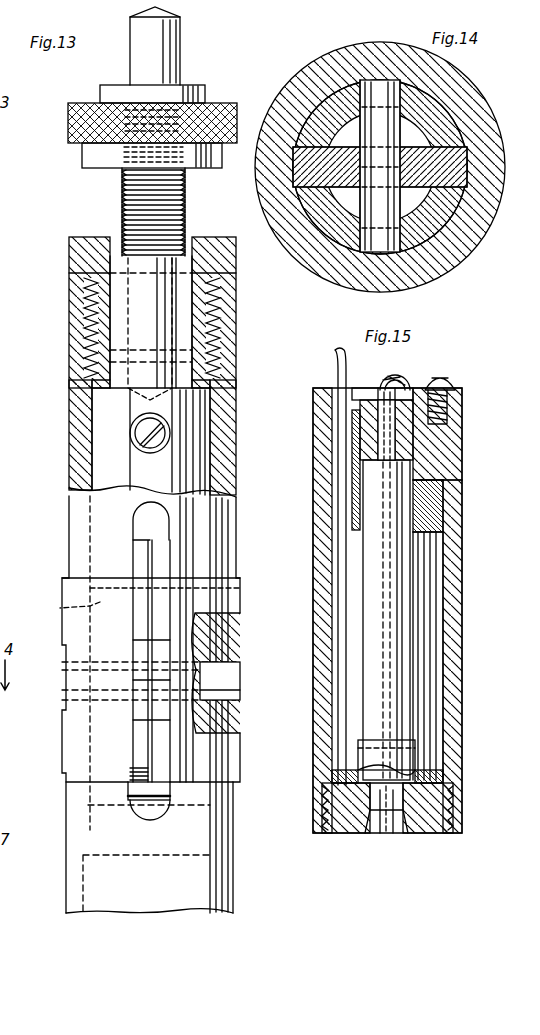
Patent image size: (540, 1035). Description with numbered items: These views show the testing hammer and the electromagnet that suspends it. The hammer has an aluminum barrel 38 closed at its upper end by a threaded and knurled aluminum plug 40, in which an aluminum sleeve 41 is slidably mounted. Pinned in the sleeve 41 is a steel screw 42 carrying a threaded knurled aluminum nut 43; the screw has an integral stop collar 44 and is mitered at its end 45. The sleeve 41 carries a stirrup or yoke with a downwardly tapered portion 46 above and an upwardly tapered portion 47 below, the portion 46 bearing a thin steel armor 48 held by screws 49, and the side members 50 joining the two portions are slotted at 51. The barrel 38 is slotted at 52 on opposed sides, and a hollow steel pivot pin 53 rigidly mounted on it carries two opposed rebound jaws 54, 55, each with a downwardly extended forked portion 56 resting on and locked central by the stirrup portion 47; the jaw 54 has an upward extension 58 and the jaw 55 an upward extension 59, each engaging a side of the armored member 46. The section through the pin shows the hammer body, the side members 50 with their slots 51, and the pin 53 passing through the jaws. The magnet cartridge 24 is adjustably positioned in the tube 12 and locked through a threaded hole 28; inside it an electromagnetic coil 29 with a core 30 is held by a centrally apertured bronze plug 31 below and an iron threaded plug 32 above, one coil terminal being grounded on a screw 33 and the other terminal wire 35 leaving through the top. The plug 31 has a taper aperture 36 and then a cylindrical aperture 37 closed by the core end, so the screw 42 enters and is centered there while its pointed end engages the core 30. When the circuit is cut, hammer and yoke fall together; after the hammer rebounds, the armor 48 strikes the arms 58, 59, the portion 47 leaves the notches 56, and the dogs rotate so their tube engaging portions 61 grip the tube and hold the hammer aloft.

In FIG. 13, the tube 12 is at (0, 570).
In FIG. 14, the tube 12 is at (345, 45).
In FIG. 15, the electromagnet housing or cartridge 24 is at (450, 615).
In FIG. 15, the hole 28 is at (445, 492).
In FIG. 15, the electromagnetic coil 29 is at (425, 660).
In FIG. 15, the core 30 is at (425, 780).
In FIG. 15, the bronze plug 31 is at (440, 806).
In FIG. 15, the iron threaded plug 32 is at (410, 440).
In FIG. 15, the screw 33 is at (448, 380).
In FIG. 15, the terminal wire 35 is at (336, 372).
In FIG. 15, the taper aperture 36 is at (370, 800).
In FIG. 15, the cylindrical aperture 37 is at (393, 800).
In FIG. 13, the aluminum barrel 38 is at (70, 878).
In FIG. 14, the aluminum barrel 38 is at (305, 128).
In FIG. 13, the threaded and knurled aluminum plug 40 is at (97, 306).
In FIG. 13, the aluminum sleeve 41 is at (117, 330).
In FIG. 13, the steel screw 42 is at (122, 200).
In FIG. 13, the knurled aluminum nut 43 is at (68, 128).
In FIG. 13, the stop collar 44 is at (190, 86).
In FIG. 13, the mitered end 45 is at (160, 12).
In FIG. 13, the downwardly tapered portion 46 is at (160, 560).
In FIG. 13, the upwardly tapered portion 47 is at (150, 810).
In FIG. 13, the steel armor 48 is at (140, 470).
In FIG. 13, the screws 49 is at (138, 430).
In FIG. 13, the side members 50 is at (200, 478).
In FIG. 14, the side members 50 is at (340, 130).
In FIG. 13, the slot 51 is at (238, 600).
In FIG. 14, the slot 51 is at (425, 107).
In FIG. 13, the slot 52 is at (138, 511).
In FIG. 13, the hollow pivot pin 53 is at (225, 678).
In FIG. 14, the hollow pivot pin 53 is at (382, 90).
In FIG. 13, the rebound jaw 54 is at (138, 548).
In FIG. 14, the rebound jaw 54 is at (300, 180).
In FIG. 13, the rebound jaw 55 is at (160, 788).
In FIG. 14, the rebound jaw 55 is at (293, 162).
In FIG. 13, the forked or slotted portion 56 is at (12, 745).
In FIG. 13, the upward extension 58 is at (17, 530).
In FIG. 13, the upward extension 59 is at (165, 530).
In FIG. 13, the tube engaging portion 61 is at (158, 715).